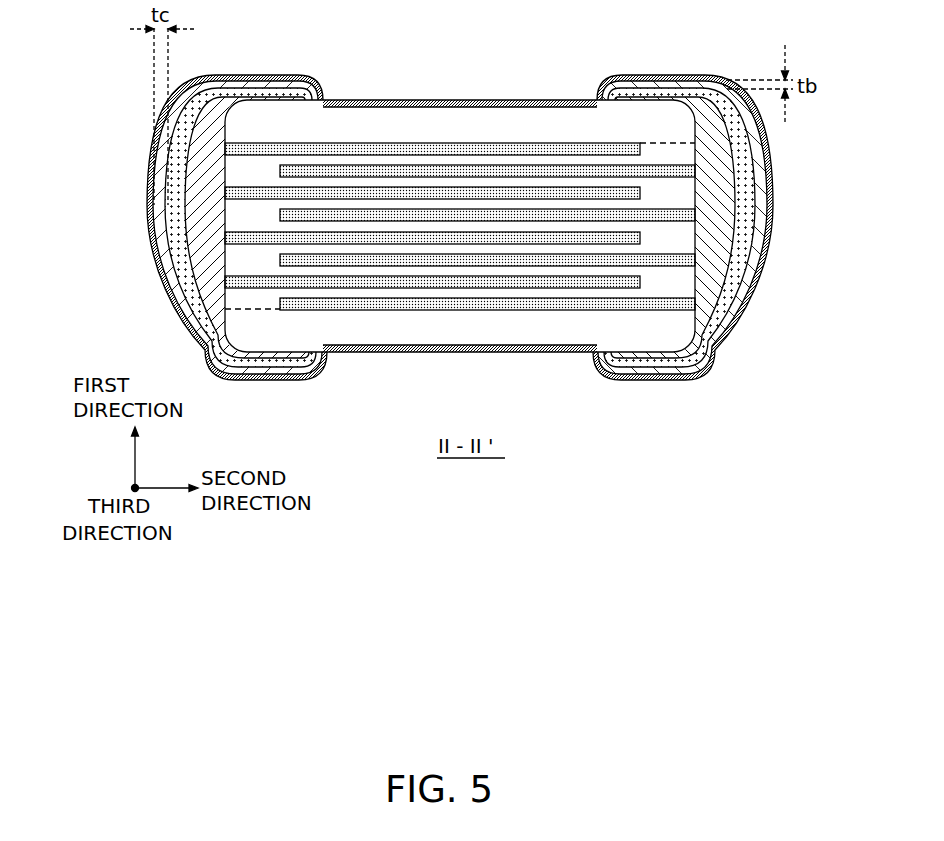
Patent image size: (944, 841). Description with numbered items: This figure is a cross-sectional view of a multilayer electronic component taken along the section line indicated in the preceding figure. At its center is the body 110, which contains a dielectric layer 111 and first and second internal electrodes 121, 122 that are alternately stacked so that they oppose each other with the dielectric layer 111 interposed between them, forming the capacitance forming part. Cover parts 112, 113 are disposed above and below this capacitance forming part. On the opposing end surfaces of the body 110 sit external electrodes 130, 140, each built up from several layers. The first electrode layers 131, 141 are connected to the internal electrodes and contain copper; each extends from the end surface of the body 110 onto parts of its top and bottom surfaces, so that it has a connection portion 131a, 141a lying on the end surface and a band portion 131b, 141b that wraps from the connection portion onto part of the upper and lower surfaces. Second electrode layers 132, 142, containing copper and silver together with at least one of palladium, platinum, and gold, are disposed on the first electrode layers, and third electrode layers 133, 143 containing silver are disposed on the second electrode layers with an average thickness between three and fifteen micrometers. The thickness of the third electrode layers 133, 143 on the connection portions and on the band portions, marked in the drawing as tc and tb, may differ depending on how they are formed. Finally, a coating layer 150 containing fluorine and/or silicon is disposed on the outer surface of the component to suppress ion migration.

The body 110 is at (418, 101).
The dielectric layer 111 is at (345, 183).
The cover part 112 is at (475, 123).
The cover part 113 is at (473, 330).
The first internal electrode 121 is at (523, 148).
The second internal electrode 122 is at (577, 170).
The external electrode 130 is at (271, 335).
The first electrode layer 131 is at (271, 335).
The connection portion 131a is at (203, 235).
The band portion 131b is at (258, 93).
The second electrode layer 132 is at (180, 268).
The third electrode layer 133 is at (168, 295).
The external electrode 140 is at (669, 334).
The first electrode layer 141 is at (695, 334).
The connection portion 141a is at (742, 197).
The band portion 141b is at (658, 95).
The second electrode layer 142 is at (745, 230).
The third electrode layer 143 is at (748, 258).
The coating layer 150 is at (760, 152).